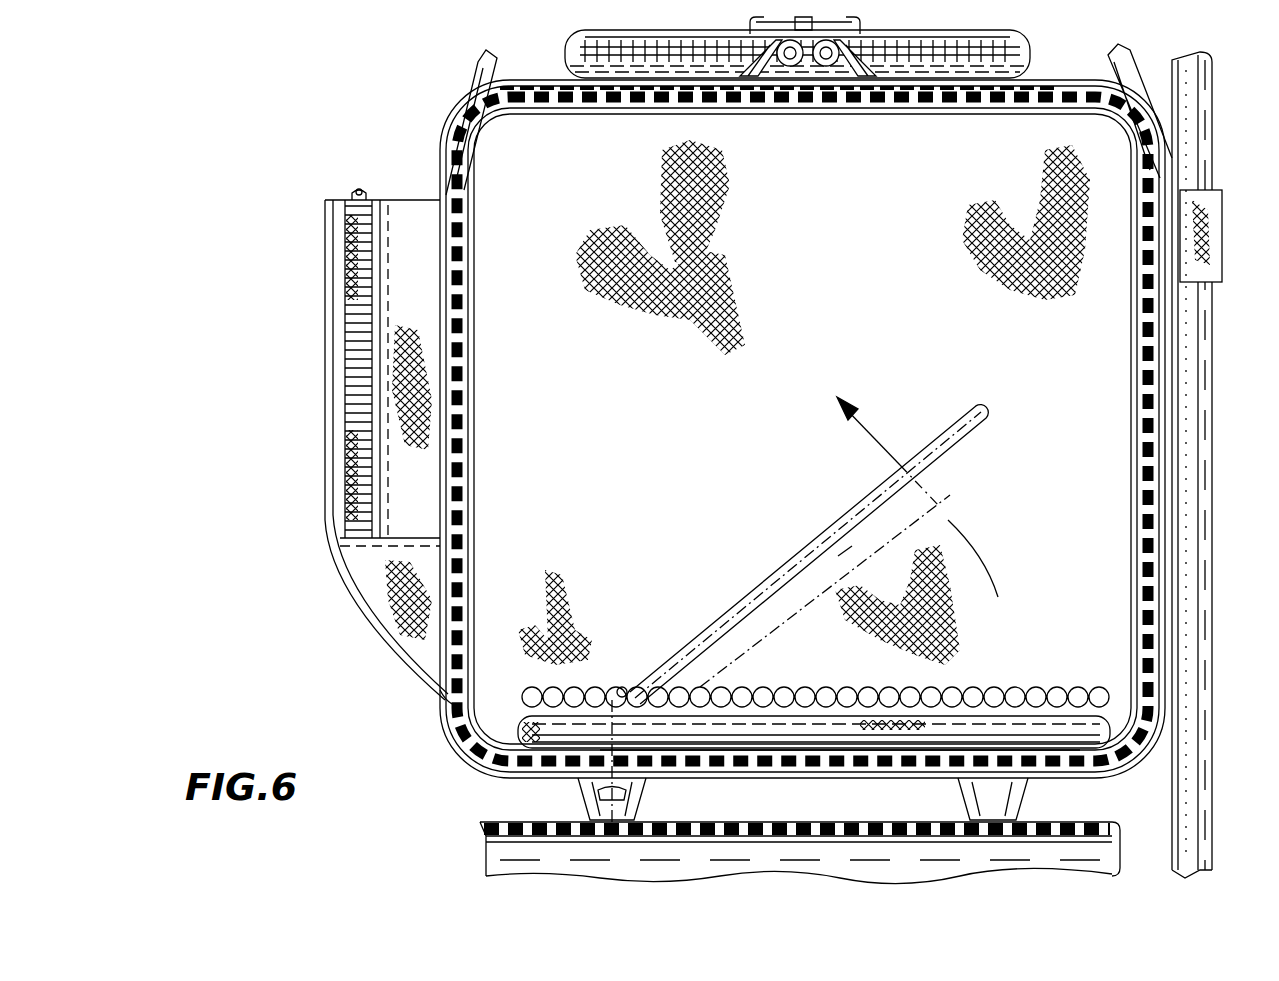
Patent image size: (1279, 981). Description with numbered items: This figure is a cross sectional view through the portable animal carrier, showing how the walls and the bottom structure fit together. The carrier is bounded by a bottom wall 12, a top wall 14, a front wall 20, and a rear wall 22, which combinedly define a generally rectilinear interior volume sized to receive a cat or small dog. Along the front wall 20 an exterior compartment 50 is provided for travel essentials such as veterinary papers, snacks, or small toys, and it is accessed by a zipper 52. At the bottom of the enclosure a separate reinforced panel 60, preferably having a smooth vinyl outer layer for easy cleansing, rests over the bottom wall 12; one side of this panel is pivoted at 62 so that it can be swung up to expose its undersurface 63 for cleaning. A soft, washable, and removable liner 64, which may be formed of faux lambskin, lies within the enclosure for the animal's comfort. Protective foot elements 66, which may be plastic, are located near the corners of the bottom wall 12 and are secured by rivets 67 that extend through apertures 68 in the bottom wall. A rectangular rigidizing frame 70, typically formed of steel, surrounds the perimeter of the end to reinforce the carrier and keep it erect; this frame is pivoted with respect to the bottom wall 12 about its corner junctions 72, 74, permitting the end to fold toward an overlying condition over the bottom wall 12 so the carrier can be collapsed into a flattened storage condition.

The bottom wall 12 is at (784, 780).
The top wall 14 is at (1046, 82).
The front wall 20 is at (445, 700).
The rear wall 22 is at (1178, 552).
The compartment 50 is at (410, 215).
The zipper 52 is at (353, 191).
The reinforced panel 60 is at (806, 566).
The pivot 62 is at (622, 686).
The undersurface 63 is at (838, 556).
The liner 64 is at (962, 688).
The foot elements 66 is at (640, 800).
The rivets 67 is at (580, 793).
The apertures 68 is at (745, 652).
The rigidizing frame 70 is at (1172, 622).
The corner junction 72 is at (470, 765).
The corner junction 74 is at (1130, 764).